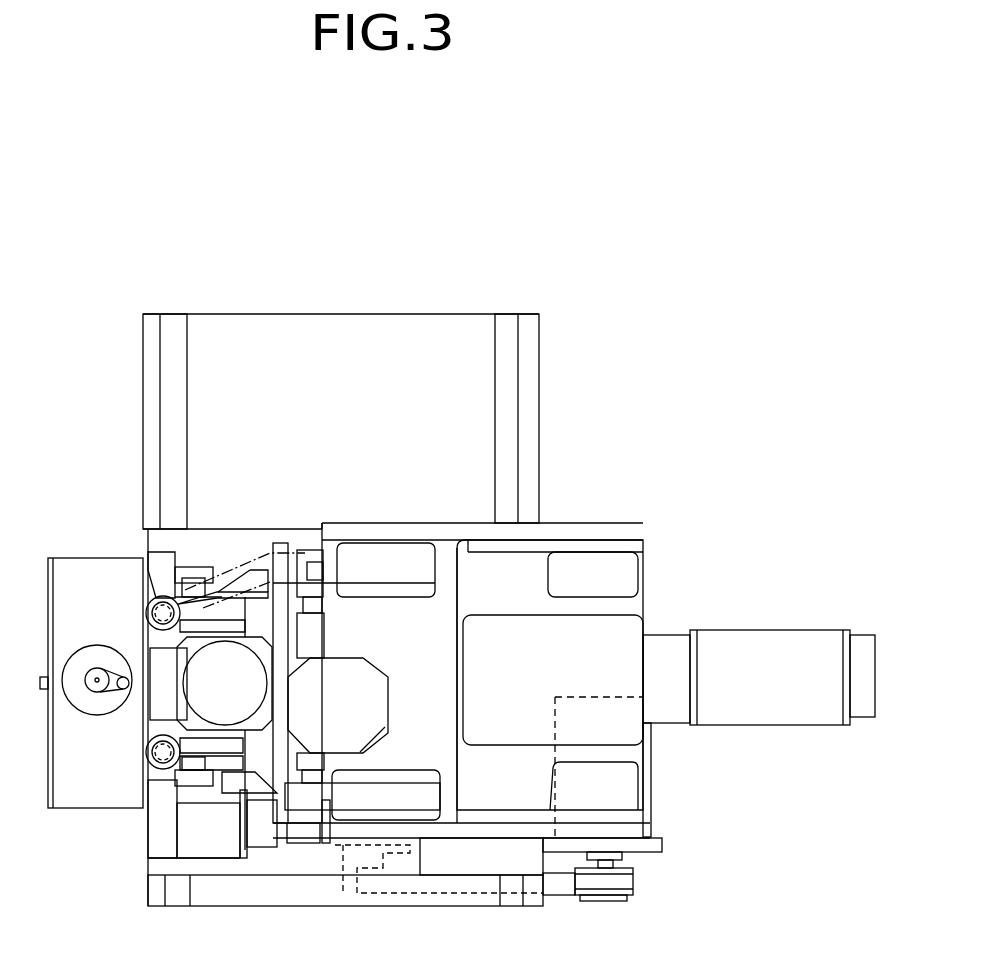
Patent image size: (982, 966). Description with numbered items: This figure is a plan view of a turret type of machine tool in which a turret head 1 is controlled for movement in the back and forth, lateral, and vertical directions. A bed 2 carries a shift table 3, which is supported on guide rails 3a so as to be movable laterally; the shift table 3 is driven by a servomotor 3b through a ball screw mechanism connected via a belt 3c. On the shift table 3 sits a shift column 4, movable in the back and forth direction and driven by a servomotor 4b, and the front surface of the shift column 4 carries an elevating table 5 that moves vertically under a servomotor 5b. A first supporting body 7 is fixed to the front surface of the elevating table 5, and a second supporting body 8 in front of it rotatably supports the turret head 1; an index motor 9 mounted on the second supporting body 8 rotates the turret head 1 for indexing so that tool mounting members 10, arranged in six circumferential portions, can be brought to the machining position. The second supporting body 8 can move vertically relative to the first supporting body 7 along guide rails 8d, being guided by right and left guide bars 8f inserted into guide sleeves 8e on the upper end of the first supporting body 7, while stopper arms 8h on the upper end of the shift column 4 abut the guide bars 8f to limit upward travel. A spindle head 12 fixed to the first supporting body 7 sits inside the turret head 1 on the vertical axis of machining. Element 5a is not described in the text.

The turret head 1 is at (68, 567).
The bed 2 is at (240, 892).
The shift table 3 is at (302, 862).
The guide rails 3a is at (170, 411).
The servomotor 3b is at (650, 777).
The belt 3c is at (558, 887).
The shift column 4 is at (537, 567).
The servomotor 4b is at (772, 640).
The elevating table 5 is at (278, 547).
The slider pin 5a is at (313, 567).
The servomotor 5b is at (365, 683).
The first supporting body 7 is at (265, 790).
The second supporting body 8 is at (158, 788).
The guide rails 8d is at (192, 577).
The guide sleeves 8e is at (157, 593).
The guide bars 8f is at (150, 613).
The stopper arms 8h is at (372, 563).
The index motor 9 is at (218, 850).
The tool mounting members 10 is at (67, 658).
The spindle head 12 is at (248, 670).